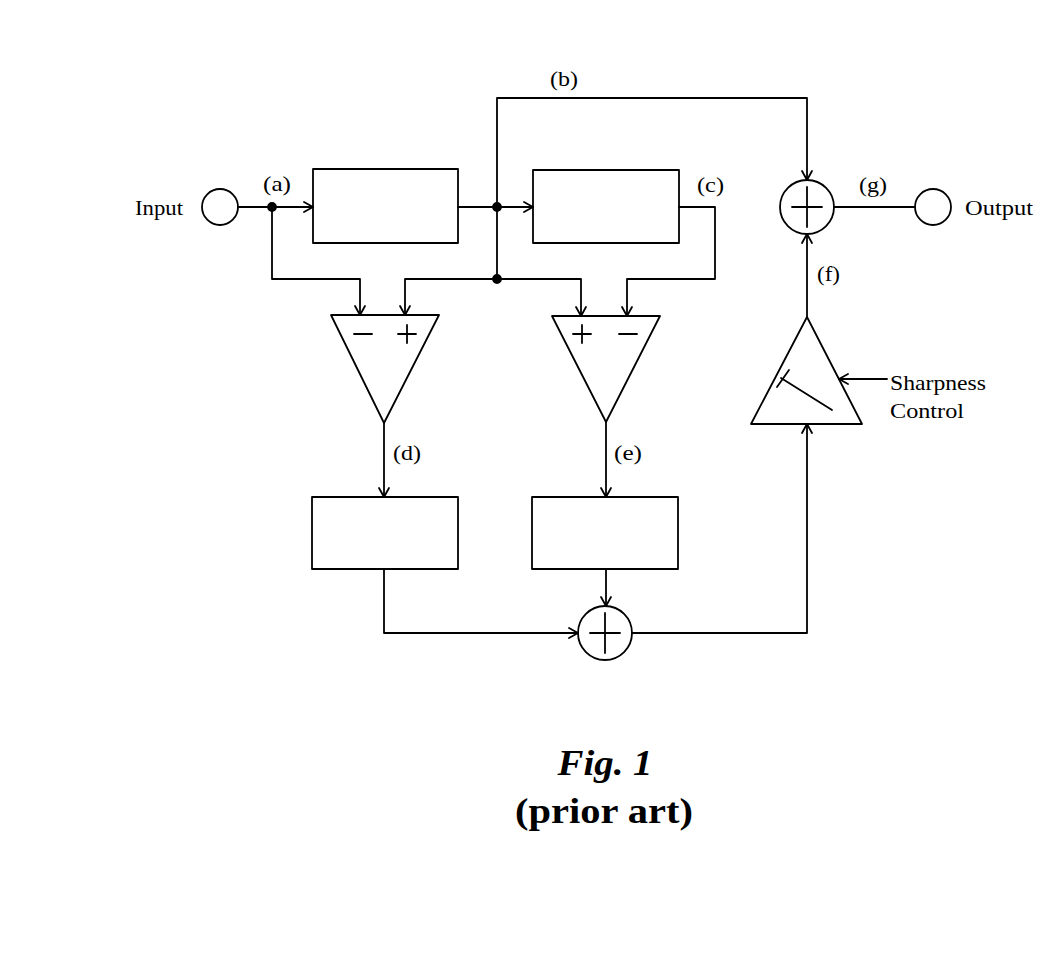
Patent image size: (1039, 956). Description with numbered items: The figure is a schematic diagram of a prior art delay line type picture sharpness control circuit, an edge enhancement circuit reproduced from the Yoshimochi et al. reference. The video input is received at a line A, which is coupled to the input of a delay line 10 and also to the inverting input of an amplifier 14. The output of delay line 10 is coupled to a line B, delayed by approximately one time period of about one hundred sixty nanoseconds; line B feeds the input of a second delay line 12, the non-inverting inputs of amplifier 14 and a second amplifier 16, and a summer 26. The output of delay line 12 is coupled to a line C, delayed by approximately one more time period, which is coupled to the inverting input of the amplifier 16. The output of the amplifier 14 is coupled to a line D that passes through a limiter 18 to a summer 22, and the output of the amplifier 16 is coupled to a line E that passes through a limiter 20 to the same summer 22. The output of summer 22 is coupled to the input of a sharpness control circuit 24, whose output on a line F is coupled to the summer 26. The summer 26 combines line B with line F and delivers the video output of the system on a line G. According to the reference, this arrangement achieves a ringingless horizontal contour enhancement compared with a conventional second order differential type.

The delay line 10 is at (333, 169).
The delay line 12 is at (661, 170).
The amplifier 14 is at (346, 345).
The amplifier 16 is at (645, 345).
The limiter 18 is at (332, 497).
The limiter 20 is at (660, 497).
The summer 22 is at (605, 660).
The sharpness control circuit 24 is at (819, 340).
The summer 26 is at (820, 183).